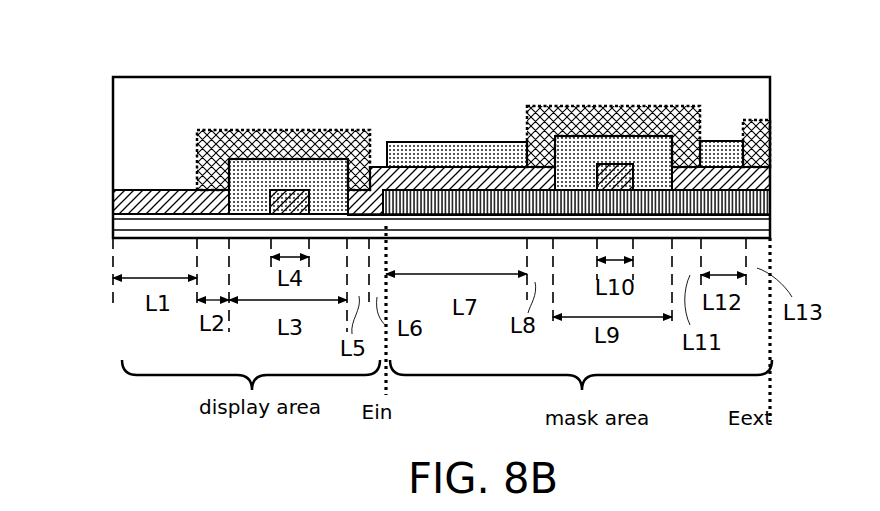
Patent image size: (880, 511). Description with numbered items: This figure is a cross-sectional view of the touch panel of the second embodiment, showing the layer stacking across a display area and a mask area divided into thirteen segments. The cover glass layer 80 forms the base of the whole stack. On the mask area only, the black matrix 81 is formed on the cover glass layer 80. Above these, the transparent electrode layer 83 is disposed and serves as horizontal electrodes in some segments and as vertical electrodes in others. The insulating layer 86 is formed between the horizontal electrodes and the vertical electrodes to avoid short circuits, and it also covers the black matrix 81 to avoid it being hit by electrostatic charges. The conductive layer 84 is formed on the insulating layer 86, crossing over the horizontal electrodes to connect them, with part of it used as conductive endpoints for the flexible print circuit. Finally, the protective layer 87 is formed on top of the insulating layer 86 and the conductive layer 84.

The cover glass layer 80 is at (112, 220).
The black matrix 81 is at (770, 204).
The transparent electrode layer 83 is at (112, 190).
The conductive layer 84 is at (213, 130).
The insulating layer 86 is at (330, 173).
The protective layer 87 is at (133, 100).